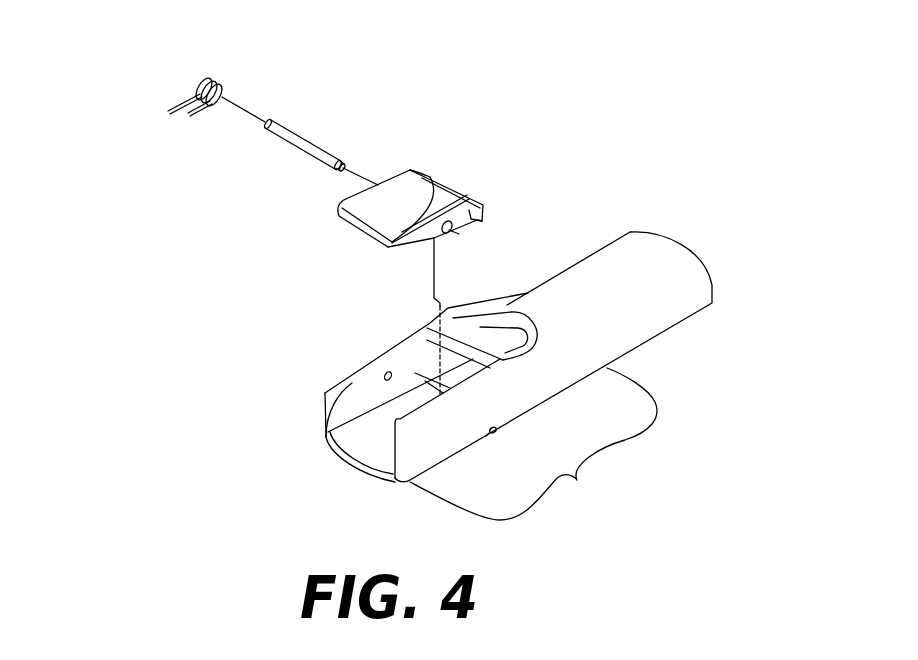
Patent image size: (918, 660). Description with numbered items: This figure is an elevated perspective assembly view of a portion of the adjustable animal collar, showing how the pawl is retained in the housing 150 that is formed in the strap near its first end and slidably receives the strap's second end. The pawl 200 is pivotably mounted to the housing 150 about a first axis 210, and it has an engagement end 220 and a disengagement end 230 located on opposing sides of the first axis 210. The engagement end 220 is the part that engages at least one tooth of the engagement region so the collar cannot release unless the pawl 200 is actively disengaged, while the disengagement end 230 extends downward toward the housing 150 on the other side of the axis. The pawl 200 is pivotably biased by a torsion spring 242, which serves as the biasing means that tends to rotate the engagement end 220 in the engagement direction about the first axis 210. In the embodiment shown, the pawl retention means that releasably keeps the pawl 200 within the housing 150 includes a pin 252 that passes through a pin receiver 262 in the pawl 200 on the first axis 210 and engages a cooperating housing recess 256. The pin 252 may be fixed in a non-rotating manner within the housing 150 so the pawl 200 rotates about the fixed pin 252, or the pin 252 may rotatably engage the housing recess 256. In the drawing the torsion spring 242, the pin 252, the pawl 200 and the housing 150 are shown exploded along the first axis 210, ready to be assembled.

The housing 150 is at (580, 481).
The pawl 200 is at (475, 213).
The first axis 210 is at (237, 105).
The engagement end 220 is at (482, 185).
The disengagement end 230 is at (392, 246).
The torsion spring 242 is at (190, 90).
The pin 252 is at (268, 130).
The housing recess 256 is at (385, 376).
The pin receiver 262 is at (457, 226).